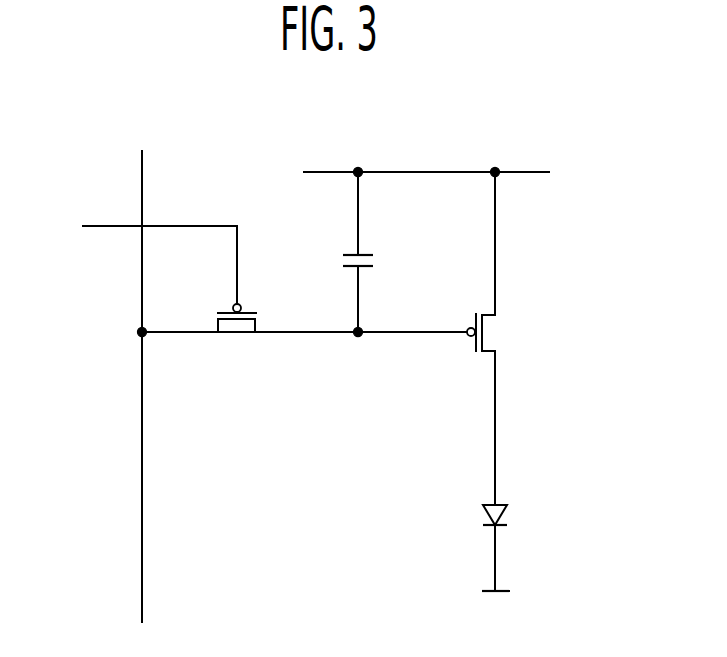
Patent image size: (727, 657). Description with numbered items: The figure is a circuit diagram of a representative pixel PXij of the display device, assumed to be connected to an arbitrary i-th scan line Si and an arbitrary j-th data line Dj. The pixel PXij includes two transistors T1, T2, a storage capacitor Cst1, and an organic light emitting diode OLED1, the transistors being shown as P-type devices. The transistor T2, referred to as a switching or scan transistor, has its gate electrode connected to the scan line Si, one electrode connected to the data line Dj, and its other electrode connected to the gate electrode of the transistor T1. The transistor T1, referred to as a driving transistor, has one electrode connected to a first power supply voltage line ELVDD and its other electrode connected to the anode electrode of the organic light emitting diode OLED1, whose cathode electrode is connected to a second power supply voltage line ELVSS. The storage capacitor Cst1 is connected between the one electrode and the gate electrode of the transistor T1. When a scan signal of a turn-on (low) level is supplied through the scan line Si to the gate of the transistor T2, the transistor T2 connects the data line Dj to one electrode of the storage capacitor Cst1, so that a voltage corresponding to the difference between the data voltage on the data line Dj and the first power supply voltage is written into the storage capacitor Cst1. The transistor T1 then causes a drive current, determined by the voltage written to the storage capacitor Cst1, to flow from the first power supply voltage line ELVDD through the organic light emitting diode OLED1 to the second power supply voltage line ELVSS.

The pixel PXij is at (584, 95).
The data line Dj is at (141, 367).
The scan line Si is at (148, 256).
The first power supply voltage line ELVDD is at (426, 155).
The second power supply voltage line ELVSS is at (494, 610).
The transistor T2 is at (303, 330).
The transistor T1 is at (488, 338).
The storage capacitor Cst1 is at (337, 254).
The organic light emitting diode OLED1 is at (524, 544).